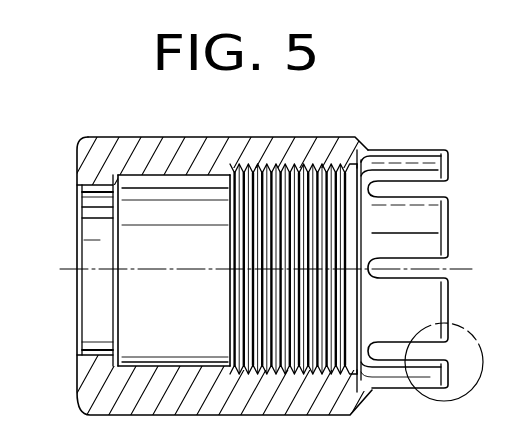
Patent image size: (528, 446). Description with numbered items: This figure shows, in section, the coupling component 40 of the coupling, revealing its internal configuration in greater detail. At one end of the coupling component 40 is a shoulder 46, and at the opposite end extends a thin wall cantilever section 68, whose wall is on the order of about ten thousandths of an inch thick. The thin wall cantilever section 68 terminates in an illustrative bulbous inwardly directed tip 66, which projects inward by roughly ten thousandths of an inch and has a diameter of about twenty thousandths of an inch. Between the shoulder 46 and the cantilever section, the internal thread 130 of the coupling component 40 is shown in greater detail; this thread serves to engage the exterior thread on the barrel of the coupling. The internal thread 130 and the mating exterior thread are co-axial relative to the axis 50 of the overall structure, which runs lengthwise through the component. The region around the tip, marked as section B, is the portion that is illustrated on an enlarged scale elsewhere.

The coupling component 40 is at (162, 137).
The shoulder 46 is at (77, 184).
The axis 50 is at (188, 256).
The bulbous inwardly directed tip 66 is at (450, 153).
The thin wall cantilever section 68 is at (419, 150).
The internal thread 130 is at (344, 320).
The section B is at (476, 377).